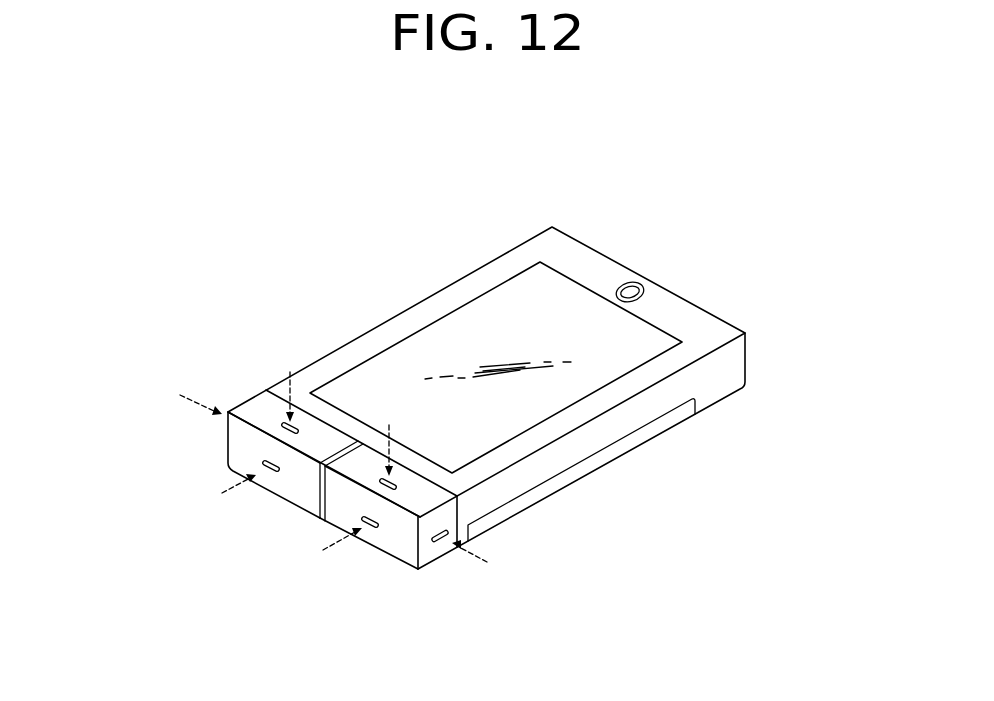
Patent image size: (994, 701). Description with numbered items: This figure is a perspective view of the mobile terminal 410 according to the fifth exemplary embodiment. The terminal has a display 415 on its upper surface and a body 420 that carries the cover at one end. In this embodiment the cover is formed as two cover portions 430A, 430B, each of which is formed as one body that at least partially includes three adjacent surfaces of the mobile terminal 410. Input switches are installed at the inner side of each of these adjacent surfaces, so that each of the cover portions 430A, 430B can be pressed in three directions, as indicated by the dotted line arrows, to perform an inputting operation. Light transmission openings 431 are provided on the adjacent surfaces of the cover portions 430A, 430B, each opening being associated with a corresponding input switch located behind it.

The mobile terminal 410 is at (680, 233).
The display unit 415 is at (495, 308).
The terminal body 420 is at (710, 388).
The cover portion 430A is at (387, 540).
The cover portion 430B is at (302, 492).
The light transmission openings 431 is at (282, 428).